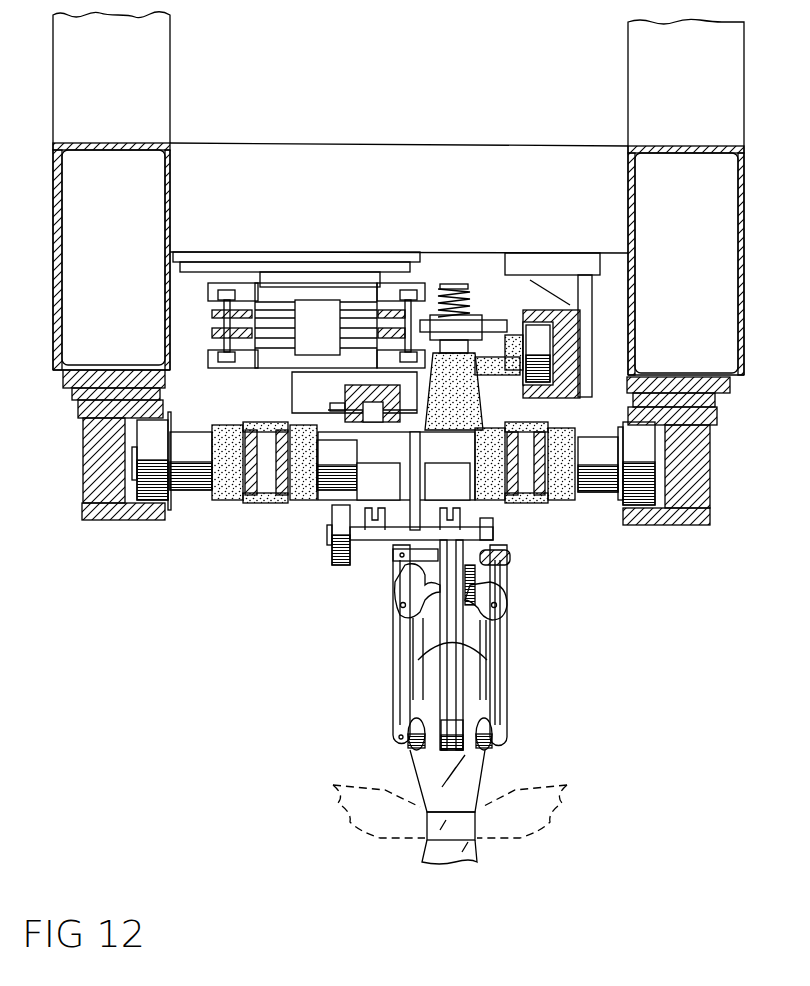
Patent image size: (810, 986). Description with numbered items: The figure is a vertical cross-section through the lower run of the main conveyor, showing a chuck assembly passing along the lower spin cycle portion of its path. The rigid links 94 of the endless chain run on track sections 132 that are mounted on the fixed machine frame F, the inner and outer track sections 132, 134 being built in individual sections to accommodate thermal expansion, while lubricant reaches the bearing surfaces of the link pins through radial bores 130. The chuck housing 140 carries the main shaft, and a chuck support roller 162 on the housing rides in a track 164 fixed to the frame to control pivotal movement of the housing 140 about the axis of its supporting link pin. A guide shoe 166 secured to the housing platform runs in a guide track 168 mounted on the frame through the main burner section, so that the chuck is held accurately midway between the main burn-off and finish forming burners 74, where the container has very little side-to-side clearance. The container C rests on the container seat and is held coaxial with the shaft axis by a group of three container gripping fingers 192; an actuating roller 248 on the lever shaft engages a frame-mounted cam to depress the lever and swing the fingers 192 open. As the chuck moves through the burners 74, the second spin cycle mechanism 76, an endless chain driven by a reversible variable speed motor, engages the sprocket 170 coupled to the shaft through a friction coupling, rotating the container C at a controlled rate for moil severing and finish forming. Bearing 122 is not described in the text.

The machine frame F is at (497, 125).
The spin cycle mechanism 76 is at (360, 301).
The sprocket 170 is at (480, 321).
The track 164 is at (568, 357).
The chuck support roller 162 is at (538, 398).
The housing 140 is at (476, 400).
The guide track 168 is at (346, 388).
The guide shoe 166 is at (345, 410).
The track section 132 is at (92, 408).
The outer track section 134 is at (152, 522).
The bearing 122 is at (150, 443).
The link 94 is at (263, 502).
The radial bore 130 is at (385, 540).
The actuating roller 248 is at (340, 565).
The container gripping fingers 192 is at (393, 672).
The container C is at (470, 777).
The main burn-off and finish forming burners 74 is at (343, 798).